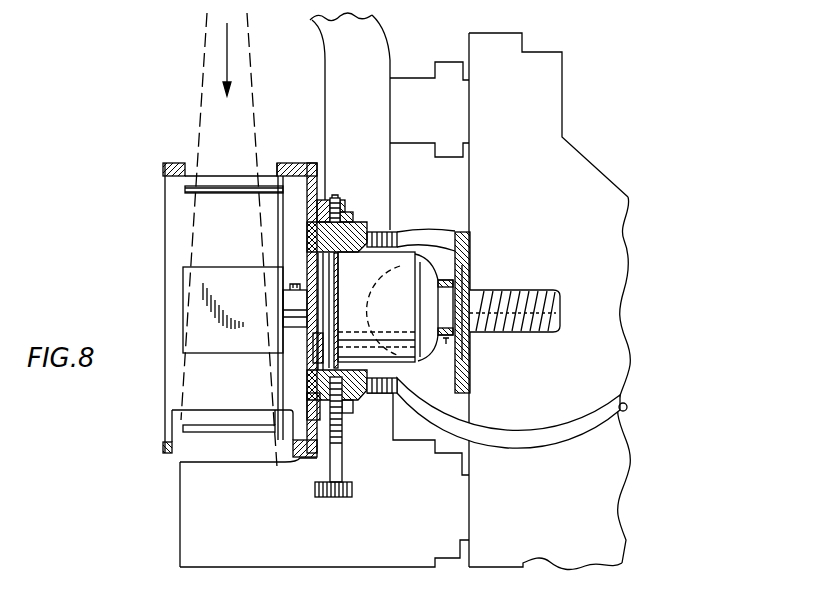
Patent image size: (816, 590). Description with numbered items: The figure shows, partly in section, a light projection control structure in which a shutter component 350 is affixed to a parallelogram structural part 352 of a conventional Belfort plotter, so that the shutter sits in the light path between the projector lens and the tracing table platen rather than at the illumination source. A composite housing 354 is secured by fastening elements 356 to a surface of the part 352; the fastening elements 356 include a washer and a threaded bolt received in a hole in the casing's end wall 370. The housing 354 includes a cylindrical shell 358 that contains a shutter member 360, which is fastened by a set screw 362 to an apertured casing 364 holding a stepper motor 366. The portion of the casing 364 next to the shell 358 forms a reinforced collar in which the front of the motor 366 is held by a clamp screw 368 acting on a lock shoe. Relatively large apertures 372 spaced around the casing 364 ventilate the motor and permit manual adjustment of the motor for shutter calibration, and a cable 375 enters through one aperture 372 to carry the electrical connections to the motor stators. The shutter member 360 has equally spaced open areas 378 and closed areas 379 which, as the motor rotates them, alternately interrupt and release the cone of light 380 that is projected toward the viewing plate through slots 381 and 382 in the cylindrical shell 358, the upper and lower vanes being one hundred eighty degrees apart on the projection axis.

The shutter component 350 is at (163, 276).
The parallelogram structural part 352 is at (580, 170).
The composite housing 354 is at (353, 222).
The fastening elements 356 is at (445, 344).
The cylindrical shell 358 is at (293, 163).
The shutter member 360 is at (200, 194).
The set screw 362 is at (335, 197).
The apertured casing 364 is at (352, 403).
The stepper motor 366 is at (402, 316).
The clamp screw 368 is at (352, 490).
The end wall 370 is at (470, 245).
The apertures 372 is at (432, 268).
The cable 375 is at (525, 438).
The open areas 378 is at (240, 237).
The closed areas 379 is at (226, 343).
The cone of light 380 is at (217, 113).
The slot 381 is at (200, 186).
The slot 382 is at (176, 449).